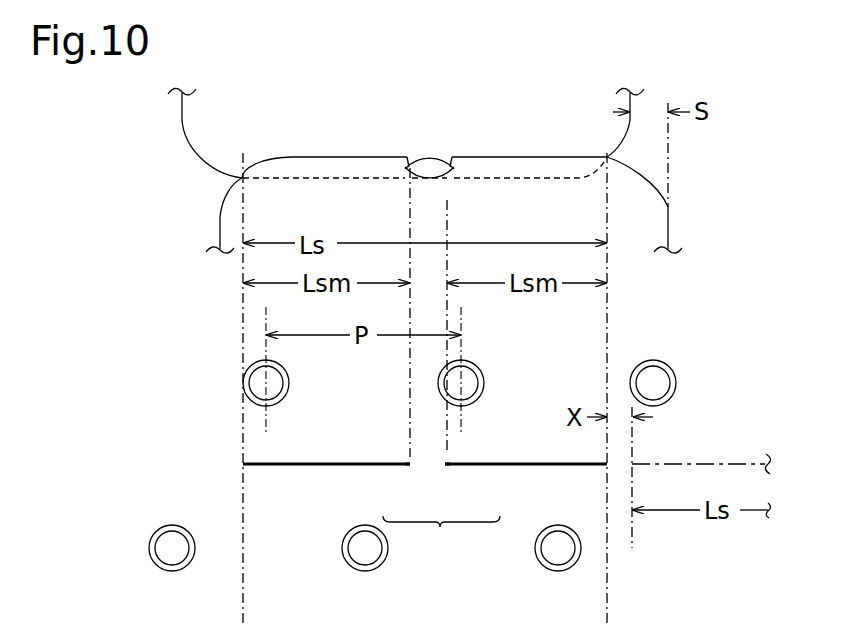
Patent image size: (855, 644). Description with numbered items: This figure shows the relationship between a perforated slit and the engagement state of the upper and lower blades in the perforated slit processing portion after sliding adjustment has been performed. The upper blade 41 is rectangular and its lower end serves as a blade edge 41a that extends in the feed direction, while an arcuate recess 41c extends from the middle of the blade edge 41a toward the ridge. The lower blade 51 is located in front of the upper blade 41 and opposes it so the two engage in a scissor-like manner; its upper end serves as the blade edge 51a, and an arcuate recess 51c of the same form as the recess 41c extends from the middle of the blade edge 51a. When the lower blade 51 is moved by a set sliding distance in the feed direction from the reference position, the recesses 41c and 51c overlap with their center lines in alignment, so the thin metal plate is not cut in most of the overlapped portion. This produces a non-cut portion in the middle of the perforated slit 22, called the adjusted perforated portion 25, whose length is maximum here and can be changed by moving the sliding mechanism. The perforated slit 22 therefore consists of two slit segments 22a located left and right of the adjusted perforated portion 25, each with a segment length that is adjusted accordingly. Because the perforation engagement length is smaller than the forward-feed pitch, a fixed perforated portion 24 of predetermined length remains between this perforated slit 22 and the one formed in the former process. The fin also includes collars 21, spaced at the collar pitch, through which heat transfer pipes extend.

The collar 21 is at (289, 383).
The perforated slit 22 is at (425, 509).
The slit segment 22a is at (393, 466).
The fixed perforated portion 24 is at (620, 465).
The adjusted perforated portion 25 is at (428, 463).
The upper blade 41 is at (431, 133).
The blade edge 41a is at (360, 183).
The arcuate recess 41c is at (440, 182).
The lower blade 51 is at (668, 226).
The blade edge 51a is at (490, 157).
The arcuate recess 51c is at (448, 160).